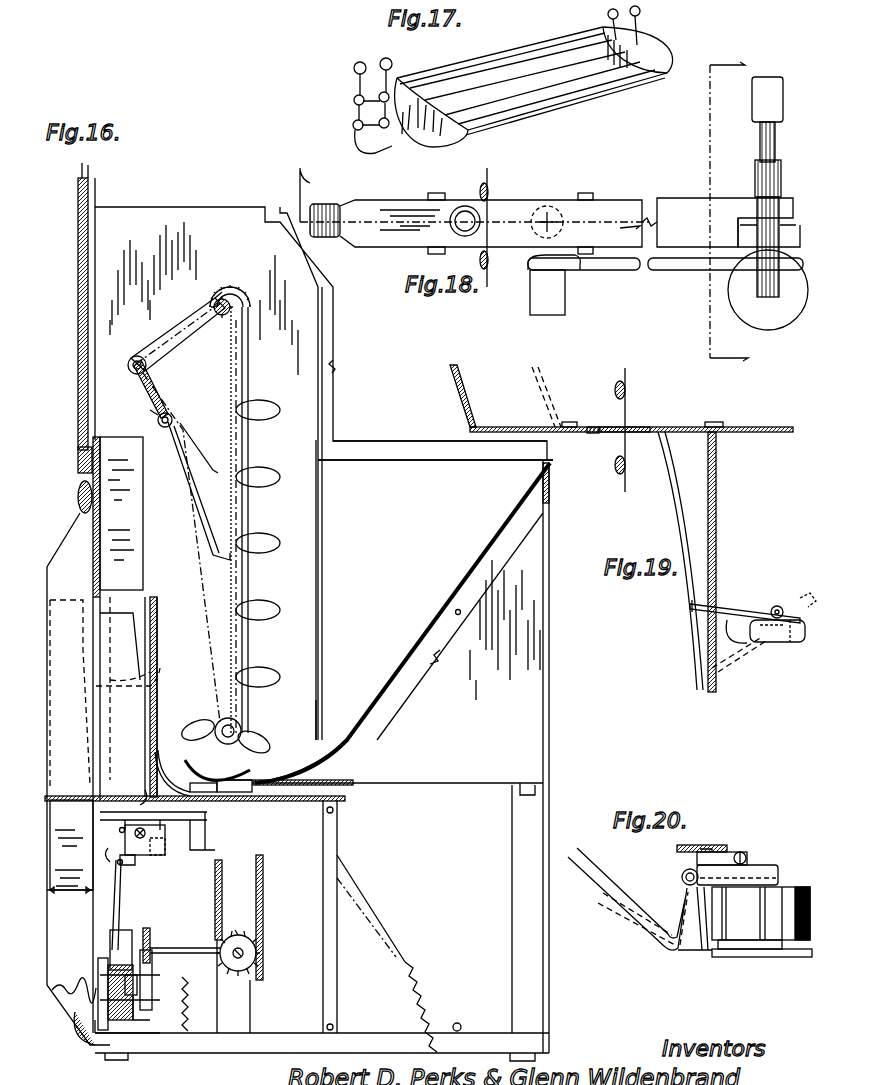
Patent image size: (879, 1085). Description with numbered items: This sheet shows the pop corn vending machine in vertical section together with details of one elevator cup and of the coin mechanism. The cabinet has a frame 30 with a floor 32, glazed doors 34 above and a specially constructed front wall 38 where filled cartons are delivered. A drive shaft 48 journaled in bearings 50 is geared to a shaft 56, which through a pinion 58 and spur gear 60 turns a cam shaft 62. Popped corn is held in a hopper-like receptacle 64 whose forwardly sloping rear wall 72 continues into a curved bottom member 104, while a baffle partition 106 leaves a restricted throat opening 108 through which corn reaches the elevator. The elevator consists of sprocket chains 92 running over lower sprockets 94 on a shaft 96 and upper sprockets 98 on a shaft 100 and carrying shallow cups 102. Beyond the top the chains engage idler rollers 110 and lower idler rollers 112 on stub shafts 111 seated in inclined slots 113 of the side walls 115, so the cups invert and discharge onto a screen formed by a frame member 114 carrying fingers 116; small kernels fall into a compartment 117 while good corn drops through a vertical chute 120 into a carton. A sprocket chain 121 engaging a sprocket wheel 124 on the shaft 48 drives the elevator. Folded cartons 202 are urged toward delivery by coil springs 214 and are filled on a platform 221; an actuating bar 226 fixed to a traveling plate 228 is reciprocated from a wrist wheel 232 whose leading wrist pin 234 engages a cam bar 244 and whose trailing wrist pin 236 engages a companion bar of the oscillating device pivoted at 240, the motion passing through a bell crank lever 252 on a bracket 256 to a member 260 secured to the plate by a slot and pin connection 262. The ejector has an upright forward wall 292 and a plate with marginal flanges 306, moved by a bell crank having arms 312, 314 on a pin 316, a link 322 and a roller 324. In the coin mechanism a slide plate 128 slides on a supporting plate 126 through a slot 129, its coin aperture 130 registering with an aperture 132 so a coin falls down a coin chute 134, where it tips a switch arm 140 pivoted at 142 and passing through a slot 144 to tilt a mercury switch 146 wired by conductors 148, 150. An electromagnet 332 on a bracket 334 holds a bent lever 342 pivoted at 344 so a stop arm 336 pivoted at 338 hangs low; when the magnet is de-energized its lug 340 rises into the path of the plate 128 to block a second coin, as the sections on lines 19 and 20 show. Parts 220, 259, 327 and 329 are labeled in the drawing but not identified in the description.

In FIG. 16, the frame 30 is at (322, 760).
In FIG. 16, the floor 32 is at (355, 1042).
In FIG. 16, the glazed doors 34 is at (78, 277).
In FIG. 16, the front wall 38 is at (78, 498).
In FIG. 16, the drive shaft 48 is at (256, 953).
In FIG. 16, the bearings 50 is at (231, 986).
In FIG. 16, the shaft 56 is at (162, 947).
In FIG. 16, the pinion 58 is at (158, 963).
In FIG. 16, the spur gear 60 is at (147, 928).
In FIG. 16, the cam shaft 62 is at (148, 985).
In FIG. 16, the hopper-like receptacle 64 is at (435, 477).
In FIG. 16, the forwardly sloping rear wall 72 is at (383, 697).
In FIG. 16, the sprocket chains 92 is at (248, 657).
In FIG. 17, the sprocket chains 92 is at (353, 80).
In FIG. 16, the lower sprockets 94 is at (230, 745).
In FIG. 16, the shaft 96 is at (241, 726).
In FIG. 16, the upper sprockets 98 is at (238, 294).
In FIG. 16, the shaft 100 is at (220, 316).
In FIG. 16, the cups or troughs 102 is at (258, 402).
In FIG. 17, the cups or troughs 102 is at (580, 95).
In FIG. 16, the bottom member 104 is at (292, 780).
In FIG. 16, the baffle partition 106 is at (322, 612).
In FIG. 16, the throat opening 108 is at (321, 698).
In FIG. 16, the idler rollers 110 is at (134, 374).
In FIG. 16, the stub shafts 111 is at (178, 398).
In FIG. 16, the idler rollers 112 is at (165, 428).
In FIG. 16, the inclined slots 113 is at (150, 412).
In FIG. 16, the frame member 114 is at (214, 303).
In FIG. 16, the side walls 115 is at (178, 215).
In FIG. 16, the screening fingers or rods 116 is at (168, 346).
In FIG. 16, the compartment 117 is at (200, 508).
In FIG. 16, the vertical chute 120 is at (135, 573).
In FIG. 16, the sprocket chain 121 is at (263, 866).
In FIG. 16, the sprocket wheel 124 is at (238, 935).
In FIG. 18, the supporting plate 126 is at (500, 202).
In FIG. 19, the supporting plate 126 is at (633, 443).
In FIG. 18, the slide plate 128 is at (410, 210).
In FIG. 19, the slide plate 128 is at (528, 429).
In FIG. 20, the slide plate 128 is at (702, 839).
In FIG. 19, the slot 129 is at (640, 427).
In FIG. 18, the coin-receiving aperture 130 is at (465, 206).
In FIG. 19, the coin-receiving aperture 130 is at (602, 418).
In FIG. 18, the aperture 132 is at (558, 206).
In FIG. 19, the aperture 132 is at (688, 440).
In FIG. 19, the coin chute 134 is at (717, 532).
In FIG. 19, the switch arm 140 is at (745, 608).
In FIG. 19, the pivot point 142 is at (780, 606).
In FIG. 19, the vertical slot 144 is at (692, 615).
In FIG. 19, the mercury switch 146 is at (792, 645).
In FIG. 19, the conductor 148 is at (722, 660).
In FIG. 19, the conductor 150 is at (725, 633).
In FIG. 16, the folded cartons 202 is at (72, 622).
In FIG. 16, the contractile coil springs 214 is at (420, 976).
In FIG. 16, the control box 220 is at (98, 820).
In FIG. 16, the platform 221 is at (153, 813).
In FIG. 16, the actuating bar 226 is at (145, 790).
In FIG. 16, the traveling plate 228 is at (148, 816).
In FIG. 16, the wrist wheel 232 is at (136, 893).
In FIG. 16, the wrist pin 234 is at (82, 1030).
In FIG. 16, the wrist pin 236 is at (140, 1003).
In FIG. 16, the pivot 240 is at (150, 928).
In FIG. 16, the cam bar 244 is at (111, 1035).
In FIG. 16, the bell crank lever 252 is at (122, 882).
In FIG. 16, the bracket 256 is at (142, 1040).
In FIG. 16, the pin 259 is at (119, 830).
In FIG. 16, the member 260 is at (118, 860).
In FIG. 16, the slot and pin connection 262 is at (117, 862).
In FIG. 16, the upright forward wall 292 is at (150, 672).
In FIG. 16, the marginal flanges 306 is at (330, 778).
In FIG. 16, the forwardly extending arm 312 is at (165, 835).
In FIG. 16, the laterally extending arm 314 is at (185, 775).
In FIG. 16, the post or pin 316 is at (205, 816).
In FIG. 16, the link 322 is at (262, 782).
In FIG. 16, the roller 324 is at (165, 850).
In FIG. 16, the arm 327 is at (158, 860).
In FIG. 16, the scrap 329 is at (53, 990).
In FIG. 18, the electromagnet 332 is at (768, 290).
In FIG. 20, the bracket 334 is at (715, 958).
In FIG. 18, the stop arm 336 is at (656, 272).
In FIG. 20, the stop arm 336 is at (748, 858).
In FIG. 18, the pivot point 338 is at (554, 285).
In FIG. 20, the pivot point 338 is at (761, 918).
In FIG. 18, the right angled lug 340 is at (800, 222).
In FIG. 20, the right angled lug 340 is at (727, 848).
In FIG. 18, the bent lever 342 is at (770, 152).
In FIG. 20, the bent lever 342 is at (662, 956).
In FIG. 20, the pivot point 344 is at (682, 877).
In FIG. 18, the section line 19 is at (470, 208).
In FIG. 18, the section line 20 is at (715, 216).